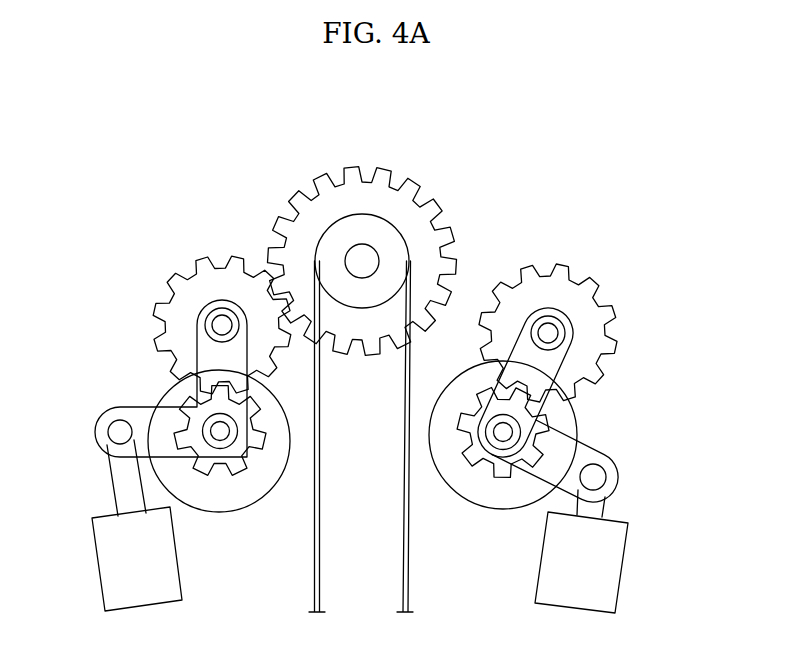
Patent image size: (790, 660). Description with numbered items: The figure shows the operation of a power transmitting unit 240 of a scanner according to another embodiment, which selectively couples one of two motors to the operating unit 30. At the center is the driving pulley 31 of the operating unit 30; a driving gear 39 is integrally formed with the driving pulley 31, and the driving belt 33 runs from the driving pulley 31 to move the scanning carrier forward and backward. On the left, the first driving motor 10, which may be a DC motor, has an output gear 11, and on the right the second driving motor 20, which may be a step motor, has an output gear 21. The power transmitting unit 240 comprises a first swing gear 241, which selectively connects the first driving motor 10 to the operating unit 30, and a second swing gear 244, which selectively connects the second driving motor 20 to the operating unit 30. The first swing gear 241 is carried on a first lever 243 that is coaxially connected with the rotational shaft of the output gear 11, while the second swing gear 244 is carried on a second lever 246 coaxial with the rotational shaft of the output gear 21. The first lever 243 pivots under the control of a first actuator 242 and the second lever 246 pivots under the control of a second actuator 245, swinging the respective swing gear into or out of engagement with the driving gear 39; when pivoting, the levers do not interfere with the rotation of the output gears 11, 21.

The operating unit 30 is at (546, 159).
The driving gear 39 is at (378, 167).
The driving pulley 31 is at (390, 234).
The driving belt 33 is at (409, 578).
The power transmitting unit 240 is at (133, 265).
The first swing gear 241 is at (196, 255).
The second swing gear 244 is at (594, 282).
The first driving motor 10 is at (217, 510).
The output gear of the first driving motor 11 is at (248, 470).
The second driving motor 20 is at (462, 493).
The output gear of the second driving motor 21 is at (504, 478).
The first lever 243 is at (133, 406).
The second lever 246 is at (590, 456).
The first actuator 242 is at (108, 569).
The second actuator 245 is at (617, 563).